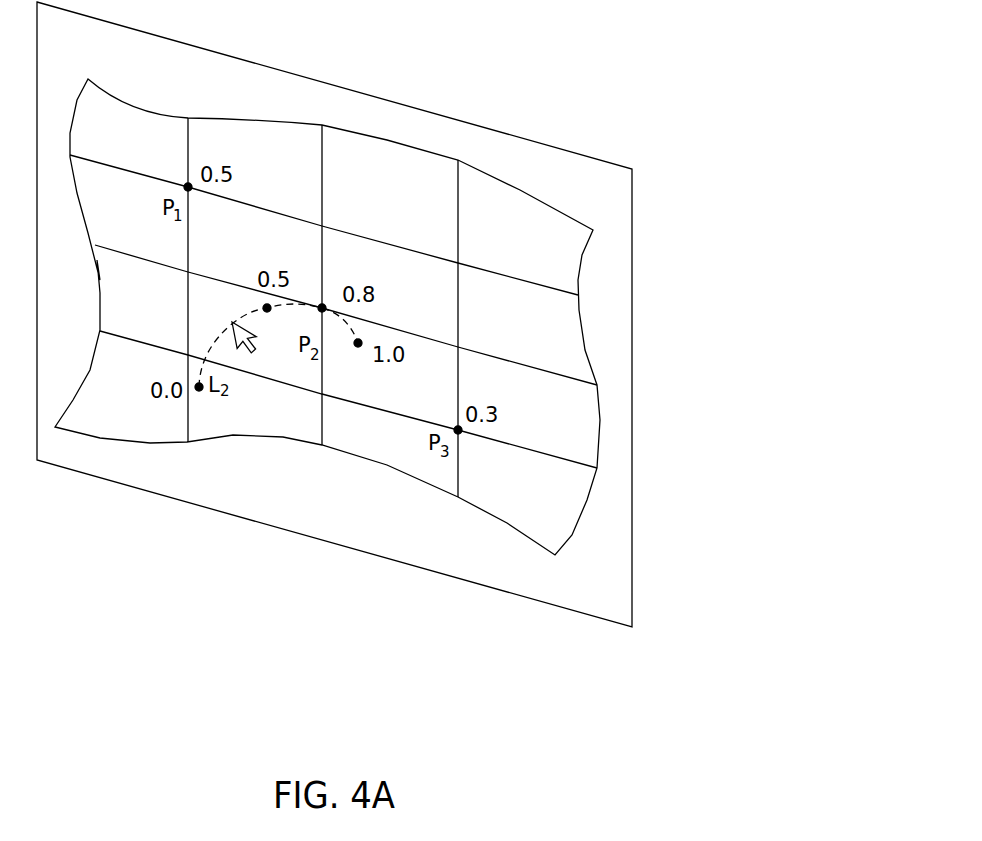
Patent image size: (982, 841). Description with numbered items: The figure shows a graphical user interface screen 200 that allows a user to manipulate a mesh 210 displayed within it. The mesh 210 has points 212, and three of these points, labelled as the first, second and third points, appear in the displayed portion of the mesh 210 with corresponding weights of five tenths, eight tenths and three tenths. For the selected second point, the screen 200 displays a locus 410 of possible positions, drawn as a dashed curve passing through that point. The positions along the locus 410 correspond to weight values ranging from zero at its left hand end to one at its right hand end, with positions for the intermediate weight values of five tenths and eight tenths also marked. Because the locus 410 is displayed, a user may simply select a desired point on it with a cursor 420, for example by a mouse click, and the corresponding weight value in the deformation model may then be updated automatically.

The graphical user interface screen 200 is at (513, 122).
The mesh 210 is at (588, 213).
The points 212 is at (322, 304).
The locus 410 is at (217, 338).
The cursor 420 is at (230, 318).